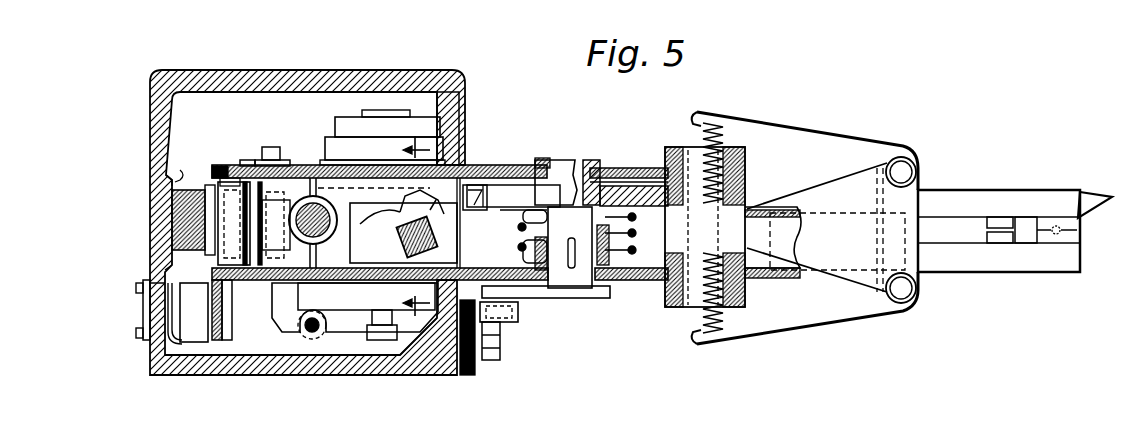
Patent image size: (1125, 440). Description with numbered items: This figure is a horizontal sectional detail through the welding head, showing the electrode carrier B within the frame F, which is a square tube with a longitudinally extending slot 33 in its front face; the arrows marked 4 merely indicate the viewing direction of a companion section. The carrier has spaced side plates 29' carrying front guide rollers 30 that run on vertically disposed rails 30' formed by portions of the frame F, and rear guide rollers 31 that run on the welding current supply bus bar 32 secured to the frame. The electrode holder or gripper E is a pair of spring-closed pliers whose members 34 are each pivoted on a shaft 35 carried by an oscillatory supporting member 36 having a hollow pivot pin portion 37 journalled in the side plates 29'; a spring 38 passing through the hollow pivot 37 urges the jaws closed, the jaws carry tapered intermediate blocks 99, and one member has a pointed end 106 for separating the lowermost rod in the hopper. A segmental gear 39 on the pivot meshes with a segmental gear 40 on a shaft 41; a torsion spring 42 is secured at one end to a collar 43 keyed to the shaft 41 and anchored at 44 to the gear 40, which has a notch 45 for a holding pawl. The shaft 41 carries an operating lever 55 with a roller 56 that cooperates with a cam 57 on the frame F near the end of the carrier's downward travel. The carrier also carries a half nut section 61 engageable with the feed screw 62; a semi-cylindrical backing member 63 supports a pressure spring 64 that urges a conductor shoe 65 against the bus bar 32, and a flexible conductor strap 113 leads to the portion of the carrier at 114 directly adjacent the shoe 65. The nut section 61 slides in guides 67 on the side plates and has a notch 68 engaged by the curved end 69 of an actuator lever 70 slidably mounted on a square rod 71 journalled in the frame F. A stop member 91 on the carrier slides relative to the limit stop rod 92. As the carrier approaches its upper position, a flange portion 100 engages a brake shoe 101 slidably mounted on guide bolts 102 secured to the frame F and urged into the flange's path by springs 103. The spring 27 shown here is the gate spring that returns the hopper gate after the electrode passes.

The frame F is at (398, 70).
The electrode carrier B is at (300, 165).
The electrode holder E is at (805, 228).
The direction of movement arrow 4 is at (416, 225).
The gate spring 27 is at (480, 272).
The side plates 29' is at (440, 219).
The front guide rollers 30 is at (382, 128).
The rails 30' is at (469, 128).
The rear guide rollers 31 is at (196, 176).
The bus bar 32 is at (185, 215).
The slot 33 is at (439, 376).
The plier member 34 is at (941, 190).
The shaft 35 is at (904, 162).
The supporting member 36 is at (779, 279).
The hollow pivot pin portion 37 is at (733, 229).
The spring 38 is at (700, 326).
The segmental gear 39 is at (720, 227).
The segmental gear 40 is at (636, 219).
The shaft 41 is at (573, 165).
The torsion spring 42 is at (637, 234).
The collar 43 is at (637, 251).
The anchor 44 is at (519, 229).
The notch 45 is at (492, 190).
The operating lever 55 is at (558, 298).
The roller 56 is at (518, 320).
The cam 57 is at (504, 338).
The half nut section 61 is at (318, 252).
The feed screw 62 is at (304, 210).
The backing member 63 is at (278, 225).
The pressure spring 64 is at (240, 223).
The conductor shoe 65 is at (204, 245).
The guides 67 is at (437, 185).
The bracket 68 is at (403, 232).
The curved end 69 is at (404, 218).
The actuator lever 70 is at (400, 239).
The square rod 71 is at (472, 223).
The stop member 91 is at (280, 320).
The limit stop rod 92 is at (310, 336).
The tapered blocks 99 is at (1000, 216).
The flange portion 100 is at (225, 321).
The brake shoe 101 is at (195, 332).
The guide bolts 102 is at (143, 323).
The springs 103 is at (150, 284).
The pointed end 106 is at (1088, 205).
The flexible conductor strap 113 is at (256, 163).
The carrier portion 114 is at (262, 148).